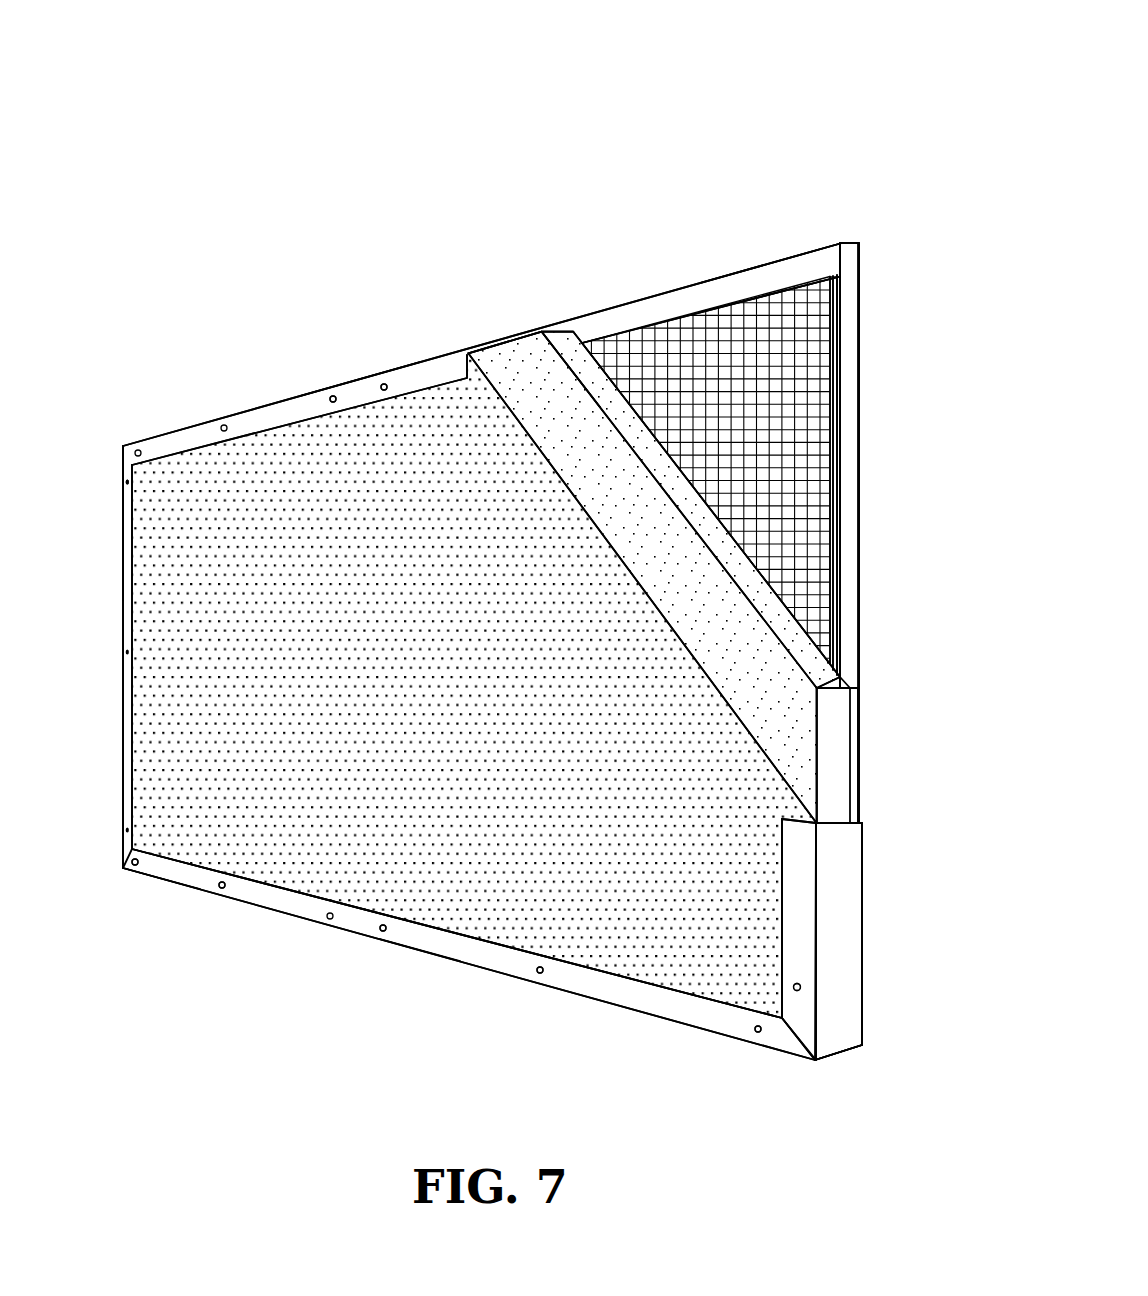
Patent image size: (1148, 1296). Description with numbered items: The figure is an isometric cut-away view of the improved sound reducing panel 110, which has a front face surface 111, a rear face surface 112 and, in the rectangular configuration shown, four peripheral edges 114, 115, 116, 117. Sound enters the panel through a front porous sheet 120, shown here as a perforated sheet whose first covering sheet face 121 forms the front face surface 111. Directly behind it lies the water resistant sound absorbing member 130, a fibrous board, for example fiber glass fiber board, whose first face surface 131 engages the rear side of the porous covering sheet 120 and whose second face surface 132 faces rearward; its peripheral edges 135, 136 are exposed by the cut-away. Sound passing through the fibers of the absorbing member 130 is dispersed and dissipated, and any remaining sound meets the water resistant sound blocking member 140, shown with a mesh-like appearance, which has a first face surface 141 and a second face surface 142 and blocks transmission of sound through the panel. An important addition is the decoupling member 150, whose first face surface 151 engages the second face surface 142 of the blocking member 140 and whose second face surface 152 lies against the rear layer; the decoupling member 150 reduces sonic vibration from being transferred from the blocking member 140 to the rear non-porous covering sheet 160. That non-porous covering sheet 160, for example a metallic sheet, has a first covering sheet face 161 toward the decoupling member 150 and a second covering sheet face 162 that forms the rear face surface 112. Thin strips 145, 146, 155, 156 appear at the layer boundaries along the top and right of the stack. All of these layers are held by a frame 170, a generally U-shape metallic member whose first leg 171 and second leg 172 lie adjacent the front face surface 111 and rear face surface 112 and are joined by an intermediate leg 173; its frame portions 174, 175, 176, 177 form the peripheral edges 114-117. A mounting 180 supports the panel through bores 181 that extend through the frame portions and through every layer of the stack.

The improved sound reducing panel 110 is at (705, 75).
The front face surface 111 is at (628, 945).
The rear face surface 112 is at (862, 930).
The peripheral edge 114 is at (472, 952).
The peripheral edge 115 is at (845, 858).
The peripheral edge 116 is at (248, 410).
The peripheral edge 117 is at (123, 683).
The front porous sheet 120 is at (310, 870).
The first covering sheet face 121 is at (162, 777).
The water resistant sound absorbing member 130 is at (720, 577).
The first face surface 131 is at (760, 635).
The second face surface 132 is at (738, 540).
The peripheral edge 135 is at (840, 722).
The peripheral edge 136 is at (548, 330).
The water resistant sound blocking member 140 is at (820, 372).
The first face surface 141 is at (698, 327).
The second face surface 142 is at (833, 348).
The mesh frame strip 145 is at (838, 453).
The top inner edge 146 is at (632, 330).
The decoupling member 150 is at (838, 563).
The first face surface 151 is at (833, 480).
The second face surface 152 is at (840, 630).
The channel strip 155 is at (840, 325).
The channel top 156 is at (840, 276).
The non-porous covering sheet 160 is at (852, 290).
The first covering sheet face 161 is at (763, 270).
The second covering sheet face 162 is at (861, 257).
The frame 170 is at (416, 937).
The first leg 171 is at (165, 872).
The second leg 172 is at (862, 897).
The intermediate leg 173 is at (847, 1020).
The frame portion 174 is at (532, 974).
The frame portion 175 is at (807, 928).
The frame portion 176 is at (357, 387).
The frame portion 177 is at (123, 570).
The mounting 180 is at (219, 887).
The bores 181 is at (760, 1036).